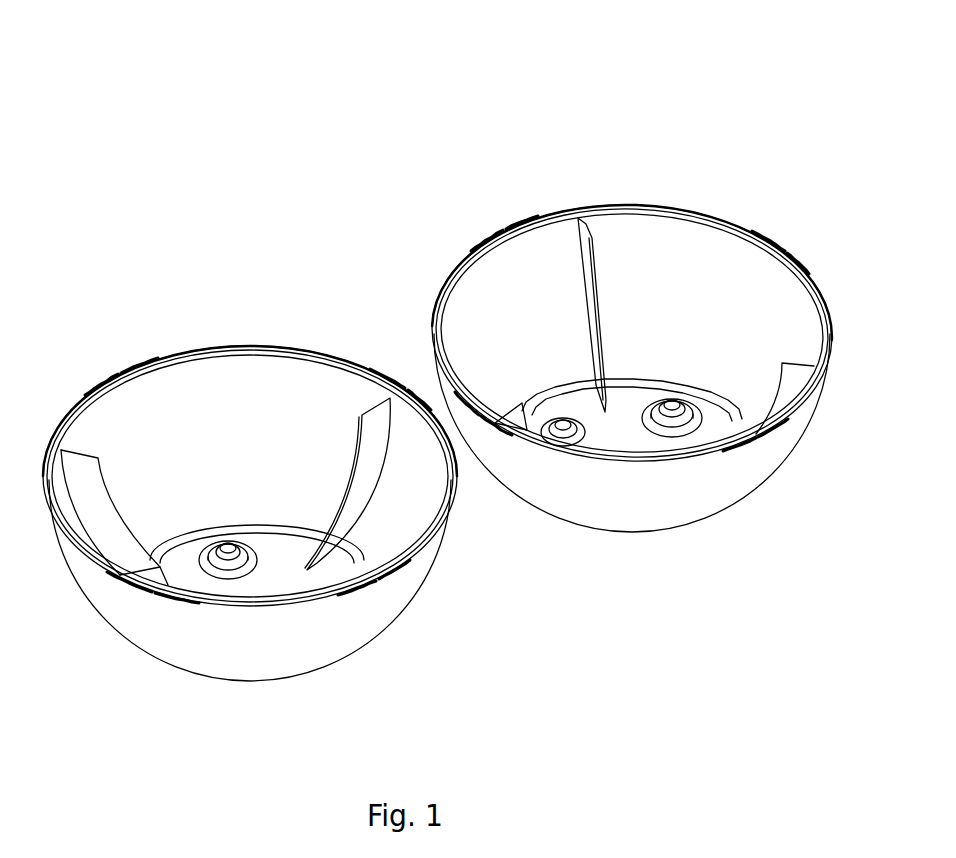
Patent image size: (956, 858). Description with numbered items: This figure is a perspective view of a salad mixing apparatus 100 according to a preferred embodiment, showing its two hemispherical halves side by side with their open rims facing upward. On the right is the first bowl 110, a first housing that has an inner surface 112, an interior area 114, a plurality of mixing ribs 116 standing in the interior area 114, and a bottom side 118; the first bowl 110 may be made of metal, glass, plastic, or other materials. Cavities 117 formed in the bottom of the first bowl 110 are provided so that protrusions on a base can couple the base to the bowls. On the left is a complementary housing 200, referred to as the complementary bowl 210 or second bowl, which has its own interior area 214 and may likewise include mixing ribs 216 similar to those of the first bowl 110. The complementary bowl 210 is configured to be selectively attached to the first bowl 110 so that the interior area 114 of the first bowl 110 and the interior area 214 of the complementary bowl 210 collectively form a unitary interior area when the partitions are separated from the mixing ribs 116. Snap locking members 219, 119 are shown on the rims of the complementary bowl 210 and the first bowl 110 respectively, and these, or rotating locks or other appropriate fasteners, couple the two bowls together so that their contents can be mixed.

The salad mixing apparatus 100 is at (191, 96).
The first bowl 110 is at (741, 565).
The inner surface 112 is at (634, 240).
The interior area 114 is at (706, 248).
The mixing ribs 116 is at (577, 232).
The cavities 117 is at (672, 430).
The bottom side 118 is at (618, 436).
The snap locking members 119 is at (485, 238).
The complementary housing 200 is at (131, 296).
The complementary bowl 210 is at (156, 715).
The interior area 214 is at (259, 391).
The mixing ribs 216 is at (325, 540).
The snap locking members 219 is at (112, 378).